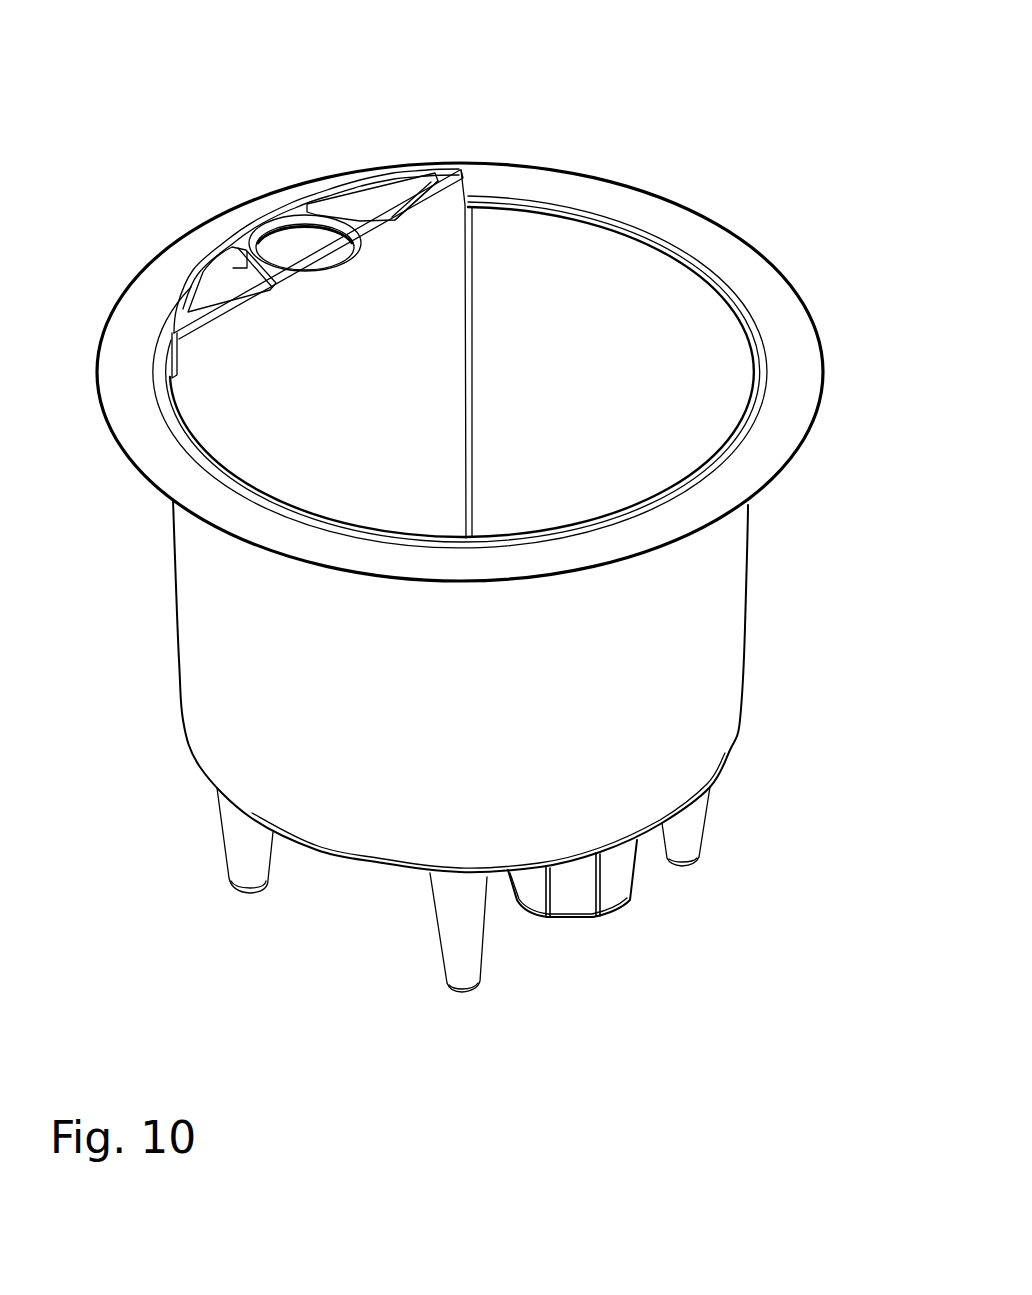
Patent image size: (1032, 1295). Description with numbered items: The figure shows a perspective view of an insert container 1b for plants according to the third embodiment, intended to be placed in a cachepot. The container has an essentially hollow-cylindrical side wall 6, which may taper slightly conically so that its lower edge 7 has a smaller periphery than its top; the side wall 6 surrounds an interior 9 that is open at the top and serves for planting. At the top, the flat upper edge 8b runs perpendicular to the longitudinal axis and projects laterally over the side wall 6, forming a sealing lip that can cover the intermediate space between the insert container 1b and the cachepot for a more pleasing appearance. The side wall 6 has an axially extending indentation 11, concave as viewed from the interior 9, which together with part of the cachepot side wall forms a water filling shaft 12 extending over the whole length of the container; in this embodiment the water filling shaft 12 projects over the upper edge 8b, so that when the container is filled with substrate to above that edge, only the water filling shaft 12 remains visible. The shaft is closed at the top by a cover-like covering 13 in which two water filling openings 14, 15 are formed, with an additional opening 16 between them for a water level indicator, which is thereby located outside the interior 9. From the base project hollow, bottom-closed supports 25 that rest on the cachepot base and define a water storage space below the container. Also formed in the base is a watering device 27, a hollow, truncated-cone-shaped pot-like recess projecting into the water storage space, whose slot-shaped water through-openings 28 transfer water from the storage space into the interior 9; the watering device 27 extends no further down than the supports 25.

The insert container 1b is at (253, 192).
The side wall 6 is at (717, 633).
The lower edge 7 is at (363, 863).
The upper edge 8b is at (553, 182).
The interior 9 is at (497, 245).
The indentation 11 is at (443, 220).
The water filling shaft 12 is at (186, 251).
The covering 13 is at (367, 223).
The water filling opening 14 is at (222, 270).
The water filling opening 15 is at (367, 197).
The additional opening 16 is at (297, 250).
The supports 25 is at (250, 880).
The watering device 27 is at (593, 962).
The water through-opening 28 is at (593, 893).